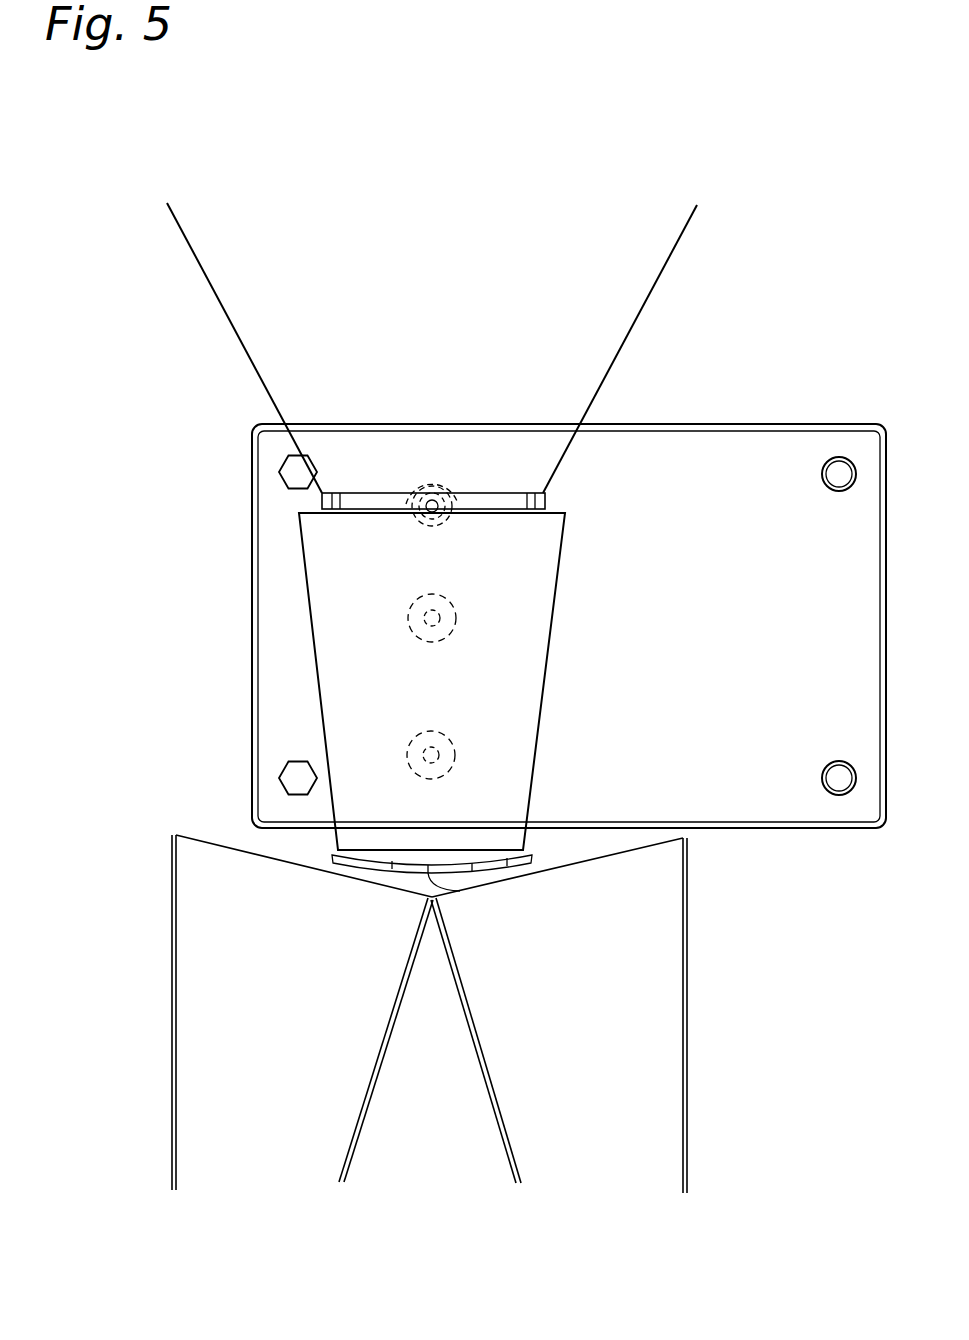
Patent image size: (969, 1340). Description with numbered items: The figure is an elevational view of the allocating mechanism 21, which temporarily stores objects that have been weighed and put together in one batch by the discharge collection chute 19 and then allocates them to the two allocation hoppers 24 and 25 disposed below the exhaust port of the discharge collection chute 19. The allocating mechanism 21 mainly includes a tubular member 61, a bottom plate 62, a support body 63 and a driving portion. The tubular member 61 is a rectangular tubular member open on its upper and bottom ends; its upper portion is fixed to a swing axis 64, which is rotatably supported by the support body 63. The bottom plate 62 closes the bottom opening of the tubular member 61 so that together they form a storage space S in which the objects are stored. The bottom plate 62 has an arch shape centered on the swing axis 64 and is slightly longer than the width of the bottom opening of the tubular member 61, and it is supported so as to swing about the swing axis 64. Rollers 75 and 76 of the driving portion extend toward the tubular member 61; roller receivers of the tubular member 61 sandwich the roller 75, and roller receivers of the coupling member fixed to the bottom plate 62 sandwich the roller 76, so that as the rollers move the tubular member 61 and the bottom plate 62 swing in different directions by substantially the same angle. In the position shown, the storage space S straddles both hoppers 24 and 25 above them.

The discharge collection chute 19 is at (676, 250).
The support body 63 is at (682, 447).
The allocating mechanism 21 is at (233, 665).
The swing axis 64 is at (432, 505).
The tubular member 61 is at (552, 626).
The roller 75 is at (412, 608).
The roller 76 is at (416, 738).
The storage space S is at (510, 758).
The bottom plate 62 is at (352, 870).
The allocation hopper 25 is at (690, 1005).
The allocation hopper 24 is at (388, 1062).